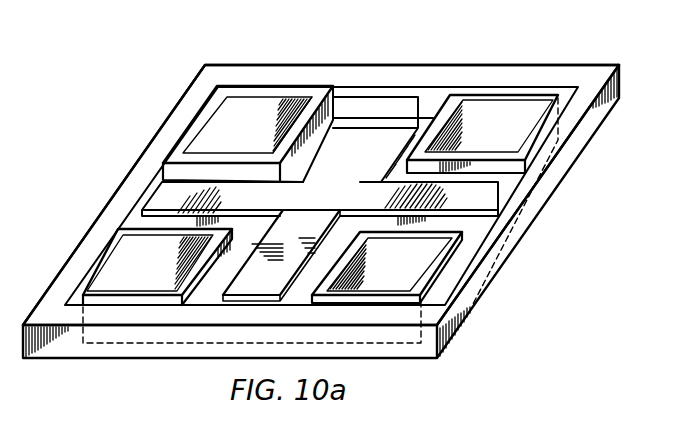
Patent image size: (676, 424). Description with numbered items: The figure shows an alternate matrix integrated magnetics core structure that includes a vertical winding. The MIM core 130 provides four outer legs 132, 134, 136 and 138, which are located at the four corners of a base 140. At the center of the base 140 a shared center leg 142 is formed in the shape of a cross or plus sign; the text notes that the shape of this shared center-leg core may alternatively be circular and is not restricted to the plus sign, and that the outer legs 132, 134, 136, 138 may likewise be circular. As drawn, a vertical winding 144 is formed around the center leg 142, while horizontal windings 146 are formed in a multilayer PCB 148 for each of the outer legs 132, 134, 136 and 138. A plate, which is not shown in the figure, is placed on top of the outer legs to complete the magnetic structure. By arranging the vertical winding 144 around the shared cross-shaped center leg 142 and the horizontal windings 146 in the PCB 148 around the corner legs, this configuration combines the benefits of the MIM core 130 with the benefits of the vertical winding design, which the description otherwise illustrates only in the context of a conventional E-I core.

The MIM core 130 is at (146, 84).
The outer leg 132 is at (232, 118).
The outer leg 134 is at (494, 117).
The outer leg 136 is at (419, 275).
The outer leg 138 is at (124, 270).
The base 140 is at (133, 345).
The shared center leg 142 is at (381, 117).
The vertical winding 144 is at (492, 176).
The horizontal windings 146 is at (297, 93).
The multilayer PCB 148 is at (568, 73).